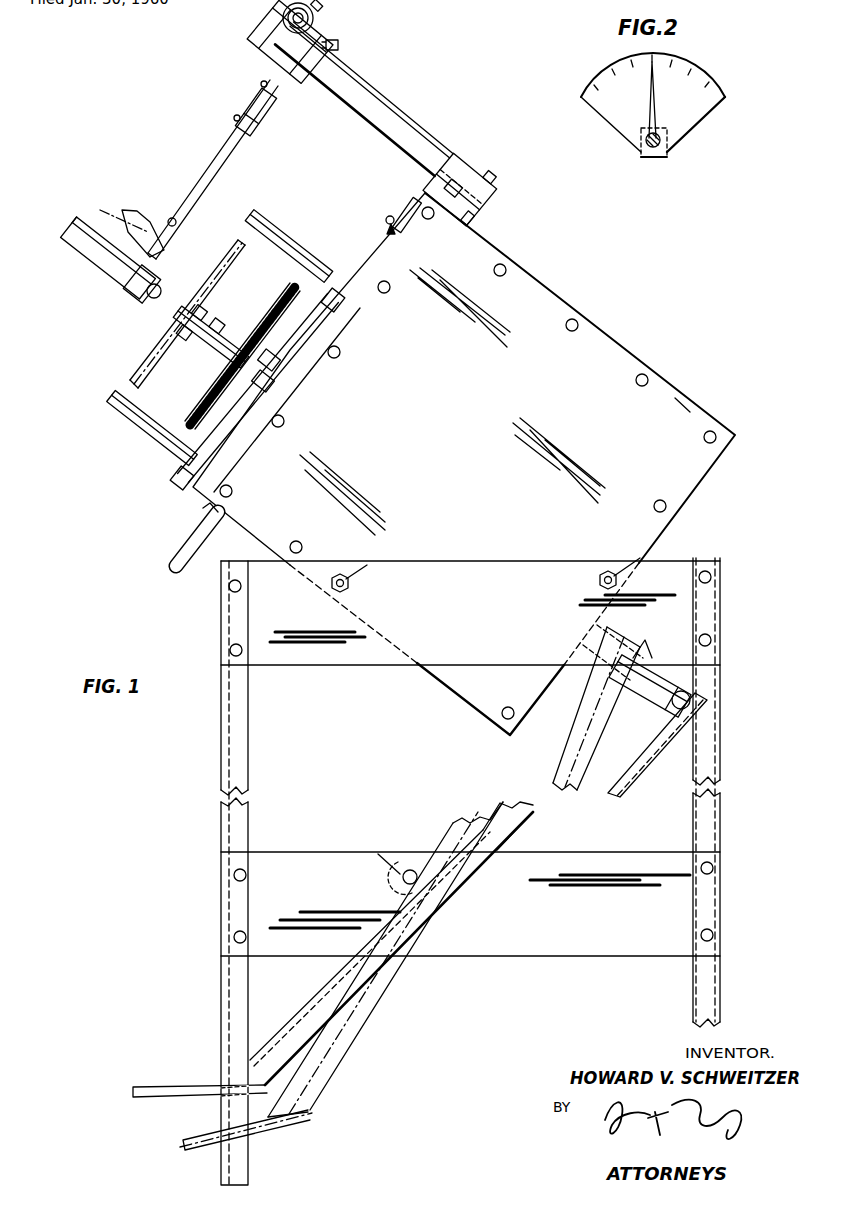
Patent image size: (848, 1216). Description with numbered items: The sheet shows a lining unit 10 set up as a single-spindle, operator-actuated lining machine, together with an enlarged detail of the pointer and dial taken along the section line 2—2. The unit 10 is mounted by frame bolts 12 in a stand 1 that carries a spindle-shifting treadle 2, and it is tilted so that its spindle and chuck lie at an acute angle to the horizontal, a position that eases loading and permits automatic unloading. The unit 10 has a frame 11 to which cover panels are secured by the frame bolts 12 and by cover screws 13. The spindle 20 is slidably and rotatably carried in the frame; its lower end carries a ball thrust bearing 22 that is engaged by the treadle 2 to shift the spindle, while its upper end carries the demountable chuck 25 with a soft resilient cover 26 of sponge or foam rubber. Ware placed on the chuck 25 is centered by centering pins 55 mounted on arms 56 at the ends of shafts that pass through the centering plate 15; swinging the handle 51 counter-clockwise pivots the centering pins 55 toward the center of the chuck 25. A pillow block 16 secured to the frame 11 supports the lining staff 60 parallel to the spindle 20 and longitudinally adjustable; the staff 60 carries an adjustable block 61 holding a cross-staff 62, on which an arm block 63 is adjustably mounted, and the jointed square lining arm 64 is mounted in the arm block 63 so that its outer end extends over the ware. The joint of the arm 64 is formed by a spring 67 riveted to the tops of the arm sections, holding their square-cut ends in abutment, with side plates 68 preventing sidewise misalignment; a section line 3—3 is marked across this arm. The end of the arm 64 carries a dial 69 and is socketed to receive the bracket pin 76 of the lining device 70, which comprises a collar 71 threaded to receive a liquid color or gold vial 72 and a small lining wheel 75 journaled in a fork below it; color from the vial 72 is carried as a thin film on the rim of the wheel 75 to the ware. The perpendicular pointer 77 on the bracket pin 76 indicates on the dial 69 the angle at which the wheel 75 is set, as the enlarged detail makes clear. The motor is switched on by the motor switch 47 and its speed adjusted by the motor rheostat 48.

In FIG. 1, the stand 1 is at (248, 714).
In FIG. 1, the spindle-shifting treadle 2 is at (118, 226).
In FIG. 1, the section line 3- 3 is at (182, 23).
In FIG. 1, the lining unit 10 is at (576, 304).
In FIG. 1, the frame 11 is at (690, 412).
In FIG. 1, the frame bolts 12 is at (330, 583).
In FIG. 1, the cover screws 13 is at (340, 350).
In FIG. 1, the centering plate 15 is at (320, 334).
In FIG. 1, the pillow block 16 is at (497, 190).
In FIG. 1, the spindle 20 is at (640, 674).
In FIG. 1, the ball thrust bearing 22 is at (690, 702).
In FIG. 1, the demountable chuck 25 is at (205, 402).
In FIG. 1, the soft resilient cover 26 is at (212, 380).
In FIG. 1, the motor switch 47 is at (388, 222).
In FIG. 1, the motor rheostat 48 is at (408, 206).
In FIG. 1, the handle 51 is at (196, 532).
In FIG. 1, the centering pins 55 is at (285, 242).
In FIG. 1, the arms 56 is at (320, 284).
In FIG. 1, the lining staff 60 is at (385, 116).
In FIG. 1, the block 61 is at (262, 52).
In FIG. 1, the cross-staff 62 is at (283, 20).
In FIG. 1, the arm block 63 is at (338, 42).
In FIG. 1, the jointed square lining arm 64 is at (238, 160).
In FIG. 1, the spring 67 is at (257, 99).
In FIG. 1, the side plates 68 is at (270, 104).
In FIG. 1, the dial 69 is at (137, 220).
In FIG. 2, the dial 69 is at (718, 84).
In FIG. 1, the lining device 70 is at (84, 260).
In FIG. 1, the collar 71 is at (120, 283).
In FIG. 1, the liquid color or gold vial 72 is at (68, 238).
In FIG. 1, the lining wheel 75 is at (160, 290).
In FIG. 2, the bracket pin 76 is at (645, 143).
In FIG. 1, the perpendicular pointer 77 is at (128, 226).
In FIG. 2, the perpendicular pointer 77 is at (650, 98).